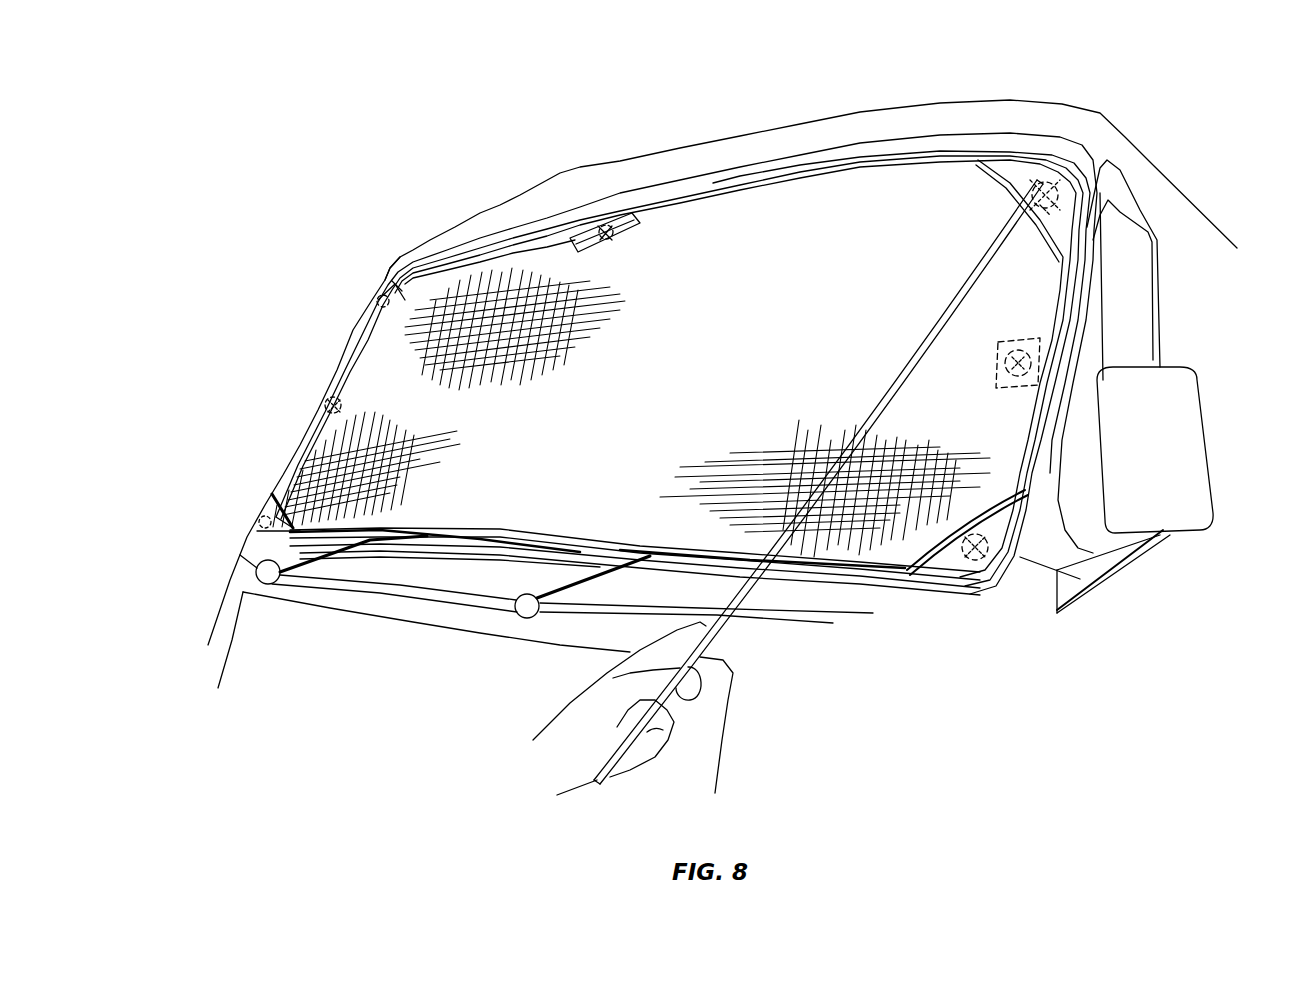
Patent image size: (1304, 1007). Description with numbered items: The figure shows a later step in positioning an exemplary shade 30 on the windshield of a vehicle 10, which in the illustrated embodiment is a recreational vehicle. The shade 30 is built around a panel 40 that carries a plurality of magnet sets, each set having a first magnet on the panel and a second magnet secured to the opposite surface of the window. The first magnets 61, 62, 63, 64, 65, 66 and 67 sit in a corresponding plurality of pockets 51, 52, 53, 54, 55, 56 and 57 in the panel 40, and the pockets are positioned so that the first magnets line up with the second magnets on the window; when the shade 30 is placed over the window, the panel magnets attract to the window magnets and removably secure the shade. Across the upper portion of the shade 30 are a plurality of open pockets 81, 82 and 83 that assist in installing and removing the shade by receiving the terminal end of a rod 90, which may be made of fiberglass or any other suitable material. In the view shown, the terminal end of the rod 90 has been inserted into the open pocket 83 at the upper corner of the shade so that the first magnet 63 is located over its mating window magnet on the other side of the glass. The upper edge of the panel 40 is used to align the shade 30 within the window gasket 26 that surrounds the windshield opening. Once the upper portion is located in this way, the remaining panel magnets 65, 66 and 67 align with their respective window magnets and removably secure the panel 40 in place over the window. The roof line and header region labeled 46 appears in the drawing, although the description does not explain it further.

The vehicle 10 is at (530, 150).
The window gasket 26 is at (760, 178).
The shade 30 is at (262, 393).
The panel 40 is at (660, 389).
The roof header 46 is at (716, 185).
The pocket 51 is at (388, 292).
The pocket 52 is at (618, 225).
The pocket 53 is at (1068, 195).
The pocket 54 is at (340, 398).
The pocket 55 is at (1035, 352).
The pocket 56 is at (278, 520).
The pocket 57 is at (1000, 527).
The first magnet 61 is at (375, 303).
The first magnet 62 is at (603, 235).
The first magnet 63 is at (1052, 200).
The first magnet 64 is at (340, 410).
The first magnet 65 is at (1030, 368).
The first magnet 66 is at (272, 527).
The first magnet 67 is at (985, 545).
The open pocket 81 is at (395, 282).
The open pocket 82 is at (603, 230).
The open pocket 83 is at (1018, 175).
The rod 90 is at (895, 372).